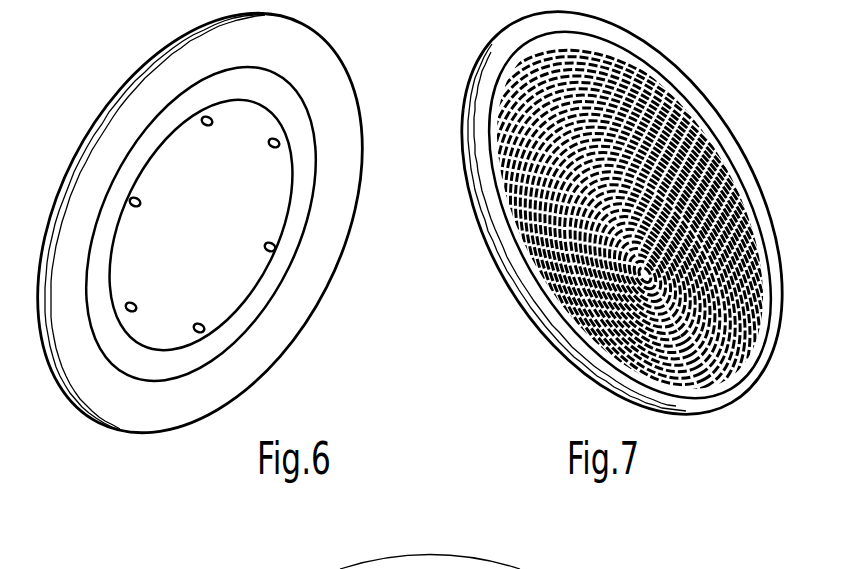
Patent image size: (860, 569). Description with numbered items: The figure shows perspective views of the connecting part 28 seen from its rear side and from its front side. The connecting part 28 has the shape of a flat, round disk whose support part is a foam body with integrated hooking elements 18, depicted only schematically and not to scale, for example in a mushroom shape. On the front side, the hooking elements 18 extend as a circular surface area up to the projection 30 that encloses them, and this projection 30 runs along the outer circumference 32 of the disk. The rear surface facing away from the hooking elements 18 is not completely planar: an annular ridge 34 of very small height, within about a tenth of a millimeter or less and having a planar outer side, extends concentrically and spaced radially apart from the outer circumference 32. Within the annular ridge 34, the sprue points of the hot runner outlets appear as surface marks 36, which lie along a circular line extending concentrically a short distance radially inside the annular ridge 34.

In FIG. 7, the hooking elements 18 is at (720, 200).
In FIG. 6, the connecting part 28 is at (150, 447).
In FIG. 7, the connecting part 28 is at (761, 409).
In FIG. 7, the projection 30 is at (765, 363).
In FIG. 6, the outer circumference 32 is at (338, 52).
In FIG. 7, the outer circumference 32 is at (485, 47).
In FIG. 6, the annular ridge 34 is at (175, 107).
In FIG. 6, the surface marks 36 is at (137, 300).